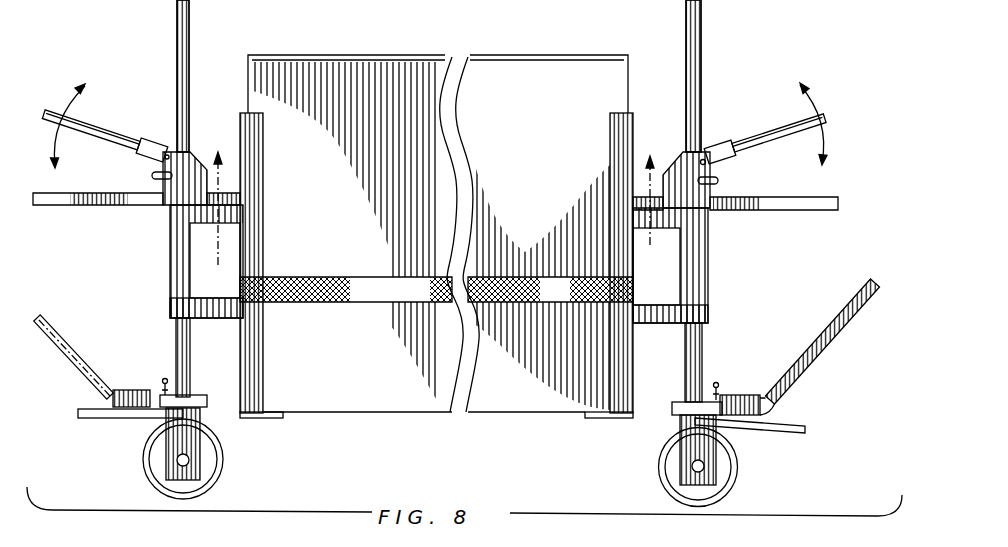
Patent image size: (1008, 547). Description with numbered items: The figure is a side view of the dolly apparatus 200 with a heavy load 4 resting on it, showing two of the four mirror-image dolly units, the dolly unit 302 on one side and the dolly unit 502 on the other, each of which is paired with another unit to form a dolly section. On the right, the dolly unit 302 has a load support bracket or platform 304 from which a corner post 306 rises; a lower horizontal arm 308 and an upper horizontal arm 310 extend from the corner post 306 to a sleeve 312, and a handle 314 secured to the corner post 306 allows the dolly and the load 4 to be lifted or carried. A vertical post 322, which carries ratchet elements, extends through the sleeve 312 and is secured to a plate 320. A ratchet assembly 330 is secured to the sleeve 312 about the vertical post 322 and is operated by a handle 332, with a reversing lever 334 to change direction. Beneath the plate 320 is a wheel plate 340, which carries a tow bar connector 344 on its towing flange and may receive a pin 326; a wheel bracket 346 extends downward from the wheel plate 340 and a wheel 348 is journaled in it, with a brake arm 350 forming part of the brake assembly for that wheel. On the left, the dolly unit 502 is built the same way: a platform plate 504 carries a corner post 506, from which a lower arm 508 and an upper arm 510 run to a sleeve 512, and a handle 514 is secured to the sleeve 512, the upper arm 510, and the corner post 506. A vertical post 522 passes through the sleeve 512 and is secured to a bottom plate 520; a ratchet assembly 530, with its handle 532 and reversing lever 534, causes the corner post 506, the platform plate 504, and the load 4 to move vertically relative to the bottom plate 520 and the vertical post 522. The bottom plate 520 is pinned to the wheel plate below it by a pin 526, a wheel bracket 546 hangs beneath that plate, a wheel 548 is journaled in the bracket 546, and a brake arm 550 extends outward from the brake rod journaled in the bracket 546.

The load 4 is at (479, 56).
The dolly apparatus 200 is at (747, 23).
The dolly unit 302 is at (705, 67).
The load support bracket or platform 304 is at (592, 418).
The corner post 306 is at (622, 395).
The lower horizontal arm 308 is at (646, 325).
The upper horizontal arm 310 is at (670, 222).
The sleeve 312 is at (708, 289).
The handle 314 is at (775, 211).
The plate 320 is at (672, 407).
The vertical post 322 is at (703, 360).
The pin 326 is at (716, 389).
The ratchet assembly 330 is at (710, 192).
The handle 332 is at (750, 143).
The reversing lever 334 is at (718, 180).
The wheel plate 340 is at (720, 432).
The tow bar connector 344 is at (780, 413).
The wheel bracket 346 is at (665, 455).
The wheel 348 is at (737, 470).
The brake arm 350 is at (800, 436).
The dolly unit 502 is at (192, 44).
The platform plate 504 is at (264, 417).
The corner post 506 is at (250, 243).
The lower arm 508 is at (207, 318).
The upper arm 510 is at (198, 226).
The sleeve 512 is at (170, 282).
The handle 514 is at (70, 207).
The bottom plate 520 is at (192, 398).
The vertical post 522 is at (176, 18).
The pin 526 is at (163, 382).
The ratchet assembly 530 is at (172, 190).
The handle 532 is at (136, 106).
The reversing lever 534 is at (152, 175).
The wheel bracket 546 is at (165, 425).
The wheel 548 is at (147, 478).
The brake arm 550 is at (86, 419).